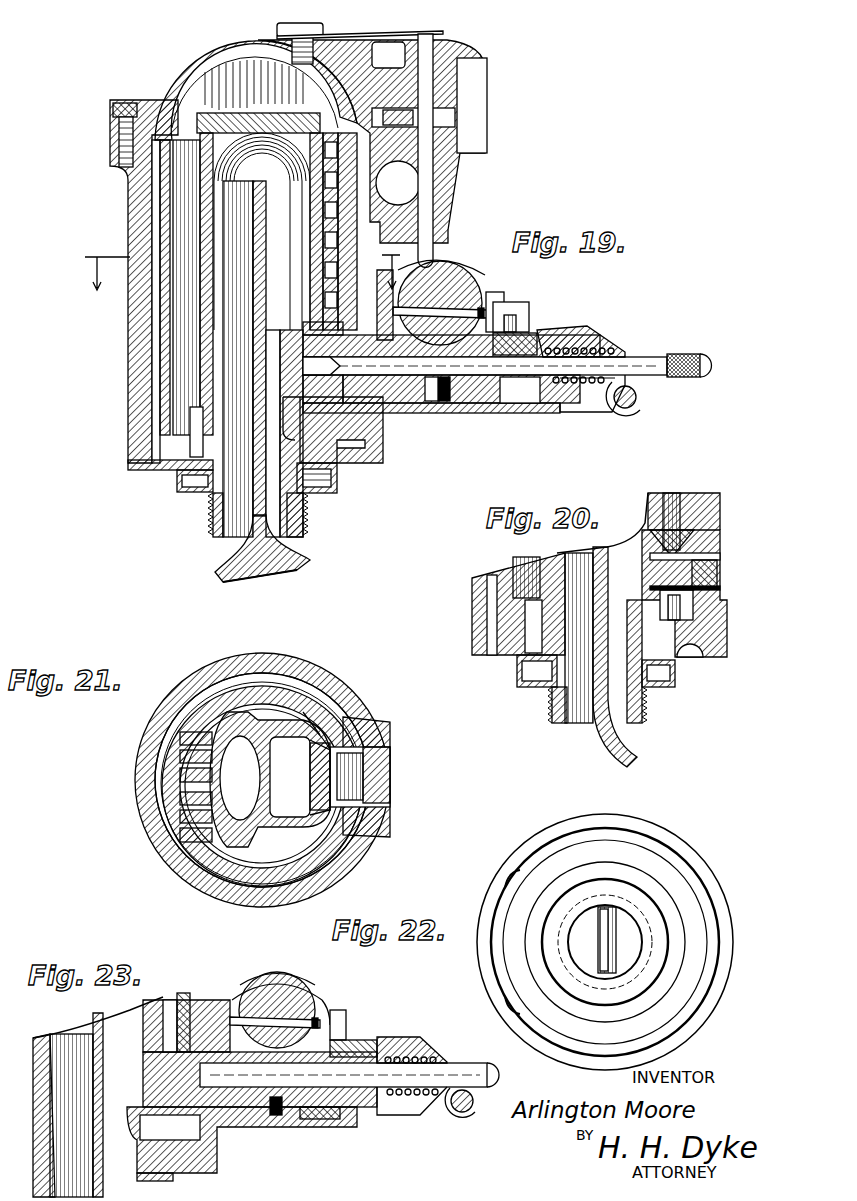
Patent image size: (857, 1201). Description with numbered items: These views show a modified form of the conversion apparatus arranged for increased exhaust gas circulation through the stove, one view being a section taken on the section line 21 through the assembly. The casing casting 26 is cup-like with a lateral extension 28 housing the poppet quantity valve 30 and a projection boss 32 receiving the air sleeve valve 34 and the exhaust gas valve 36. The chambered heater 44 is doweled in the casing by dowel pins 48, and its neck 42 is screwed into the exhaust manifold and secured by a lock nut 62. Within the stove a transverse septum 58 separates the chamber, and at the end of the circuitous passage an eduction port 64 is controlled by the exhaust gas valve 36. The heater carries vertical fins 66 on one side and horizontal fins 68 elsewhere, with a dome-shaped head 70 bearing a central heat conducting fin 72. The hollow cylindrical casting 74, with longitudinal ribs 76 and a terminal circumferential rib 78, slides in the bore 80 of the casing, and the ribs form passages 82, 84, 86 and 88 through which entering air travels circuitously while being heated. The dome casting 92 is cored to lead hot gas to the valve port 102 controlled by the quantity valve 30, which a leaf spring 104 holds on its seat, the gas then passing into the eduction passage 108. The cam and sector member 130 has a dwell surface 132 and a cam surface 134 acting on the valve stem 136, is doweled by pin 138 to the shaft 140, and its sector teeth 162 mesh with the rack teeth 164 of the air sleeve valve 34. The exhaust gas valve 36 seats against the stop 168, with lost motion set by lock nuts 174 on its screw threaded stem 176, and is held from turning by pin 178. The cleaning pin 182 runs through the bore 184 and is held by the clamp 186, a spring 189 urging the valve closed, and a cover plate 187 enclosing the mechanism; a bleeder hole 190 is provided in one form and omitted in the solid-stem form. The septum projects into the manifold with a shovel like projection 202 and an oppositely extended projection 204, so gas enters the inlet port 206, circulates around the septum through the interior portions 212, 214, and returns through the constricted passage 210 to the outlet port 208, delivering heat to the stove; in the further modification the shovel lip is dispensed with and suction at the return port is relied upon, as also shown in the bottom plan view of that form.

In FIG. 19, the section line 21 is at (249, 265).
In FIG. 19, the casing casting 26 is at (138, 352).
In FIG. 20, the casing casting 26 is at (478, 618).
In FIG. 22, the casing casting 26 is at (497, 875).
In FIG. 19, the lateral extension 28 is at (458, 175).
In FIG. 19, the poppet quantity valve 30 is at (445, 118).
In FIG. 19, the projection boss 32 is at (405, 405).
In FIG. 23, the projection boss 32 is at (228, 1128).
In FIG. 19, the air sleeve valve 34 is at (440, 402).
In FIG. 20, the air sleeve valve 34 is at (703, 587).
In FIG. 21, the air sleeve valve 34 is at (372, 790).
In FIG. 19, the exhaust gas valve 36 is at (308, 343).
In FIG. 20, the exhaust gas valve 36 is at (660, 543).
In FIG. 21, the exhaust gas valve 36 is at (320, 785).
In FIG. 23, the exhaust gas valve 36 is at (150, 1075).
In FIG. 19, the neck 42 is at (215, 507).
In FIG. 19, the chambered heater 44 is at (223, 347).
In FIG. 19, the dowel pins 48 is at (196, 453).
In FIG. 20, the dowel pins 48 is at (532, 643).
In FIG. 19, the partition wall 58 is at (259, 268).
In FIG. 21, the partition wall 58 is at (263, 789).
In FIG. 23, the partition wall 58 is at (95, 1013).
In FIG. 19, the lock nut 62 is at (190, 480).
In FIG. 20, the lock nut 62 is at (675, 670).
In FIG. 22, the lock nut 62 is at (683, 917).
In FIG. 23, the lock nut 62 is at (170, 1180).
In FIG. 21, the eduction port 64 is at (312, 724).
In FIG. 19, the vertical fins 66 is at (182, 200).
In FIG. 21, the vertical fins 66 is at (183, 770).
In FIG. 19, the horizontal fins 68 is at (336, 228).
In FIG. 21, the horizontal fins 68 is at (277, 707).
In FIG. 19, the dome-shaped head 70 is at (254, 85).
In FIG. 19, the central heat conducting fin 72 is at (235, 70).
In FIG. 19, the hollow cylindrical casting 74 is at (160, 228).
In FIG. 21, the longitudinal ribs 76 is at (173, 702).
In FIG. 19, the terminal circumferential rib 78 is at (160, 108).
In FIG. 19, the bore 80 is at (152, 315).
In FIG. 20, the bore 80 is at (490, 593).
In FIG. 21, the bore 80 is at (173, 832).
In FIG. 22, the bore 80 is at (700, 988).
In FIG. 21, the passage 82 is at (165, 757).
In FIG. 22, the passage 82 is at (512, 893).
In FIG. 21, the passages 84 is at (222, 663).
In FIG. 21, the passages 86 is at (330, 700).
In FIG. 21, the passage 88 is at (365, 840).
In FIG. 19, the dome casting 92 is at (225, 77).
In FIG. 19, the valve port 102 is at (440, 140).
In FIG. 19, the leaf spring 104 is at (405, 31).
In FIG. 19, the eduction passage 108 is at (300, 30).
In FIG. 23, the cam and sector member 130 is at (263, 990).
In FIG. 19, the dwell surface 132 is at (462, 276).
In FIG. 23, the dwell surface 132 is at (285, 982).
In FIG. 23, the cam surface 134 is at (297, 990).
In FIG. 19, the valve stem 136 is at (440, 262).
In FIG. 19, the dowel pin 138 is at (472, 312).
In FIG. 23, the dowel pin 138 is at (340, 1022).
In FIG. 19, the shaft 140 is at (470, 298).
In FIG. 19, the sector teeth 162 is at (430, 290).
In FIG. 23, the sector teeth 162 is at (240, 1015).
In FIG. 19, the rack teeth 164 is at (505, 325).
In FIG. 23, the rack teeth 164 is at (188, 995).
In FIG. 19, the stop 168 is at (330, 390).
In FIG. 20, the stop 168 is at (652, 588).
In FIG. 19, the lock nuts 174 is at (522, 406).
In FIG. 23, the lock nuts 174 is at (370, 1040).
In FIG. 19, the screw threaded stem 176 is at (520, 338).
In FIG. 19, the pin or screw 178 is at (442, 404).
In FIG. 23, the pin or screw 178 is at (290, 1108).
In FIG. 19, the cleaning pin 182 is at (632, 357).
In FIG. 19, the bore 184 is at (330, 370).
In FIG. 20, the bore 184 is at (680, 573).
In FIG. 19, the clamp 186 is at (580, 330).
In FIG. 23, the clamp 186 is at (412, 1050).
In FIG. 23, the cover plate 187 is at (322, 1000).
In FIG. 19, the spring 189 is at (636, 345).
In FIG. 23, the spring 189 is at (472, 1064).
In FIG. 19, the bleeder hole 190 is at (326, 360).
In FIG. 20, the bleeder hole 190 is at (660, 560).
In FIG. 21, the bleeder hole 190 is at (345, 777).
In FIG. 19, the shovel like projection 202 is at (236, 578).
In FIG. 19, the oppositely extended projection 204 is at (292, 566).
In FIG. 20, the oppositely extended projection 204 is at (640, 757).
In FIG. 22, the oppositely extended projection 204 is at (640, 946).
In FIG. 19, the inlet port 206 is at (240, 537).
In FIG. 20, the inlet port 206 is at (590, 700).
In FIG. 22, the inlet port 206 is at (578, 942).
In FIG. 19, the outlet port 208 is at (283, 525).
In FIG. 20, the outlet port 208 is at (647, 723).
In FIG. 19, the passage 210 is at (275, 479).
In FIG. 19, the interior portion 212 is at (247, 358).
In FIG. 21, the interior portion 212 is at (237, 768).
In FIG. 19, the interior portion 214 is at (235, 378).
In FIG. 21, the interior portion 214 is at (320, 768).